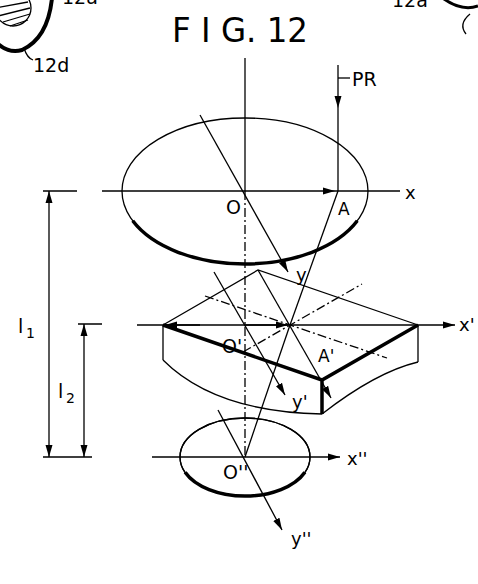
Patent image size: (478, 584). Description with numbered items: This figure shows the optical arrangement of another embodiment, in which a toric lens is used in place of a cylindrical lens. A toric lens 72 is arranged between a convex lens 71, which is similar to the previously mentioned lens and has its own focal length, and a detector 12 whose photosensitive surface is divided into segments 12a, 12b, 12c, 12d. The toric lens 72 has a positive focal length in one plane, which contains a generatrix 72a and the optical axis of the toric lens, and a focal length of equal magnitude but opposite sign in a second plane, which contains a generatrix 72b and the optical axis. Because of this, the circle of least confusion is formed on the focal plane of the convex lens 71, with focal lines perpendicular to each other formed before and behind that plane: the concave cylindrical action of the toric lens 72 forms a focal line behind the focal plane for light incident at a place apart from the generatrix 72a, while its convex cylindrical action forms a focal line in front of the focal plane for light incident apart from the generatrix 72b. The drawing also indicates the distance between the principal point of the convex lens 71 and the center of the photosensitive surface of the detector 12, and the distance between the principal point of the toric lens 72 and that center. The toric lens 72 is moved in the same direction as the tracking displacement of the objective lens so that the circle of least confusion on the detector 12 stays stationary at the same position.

The convex lens 71 is at (343, 147).
The toric lens 72 is at (380, 313).
The generatrix 72a is at (193, 295).
The generatrix 72b is at (345, 289).
The detector 12 is at (218, 503).
The photodetector segment 12a is at (303, 470).
The photodetector segment 12b is at (302, 437).
The photodetector segment 12c is at (198, 427).
The photodetector segment 12d is at (186, 468).